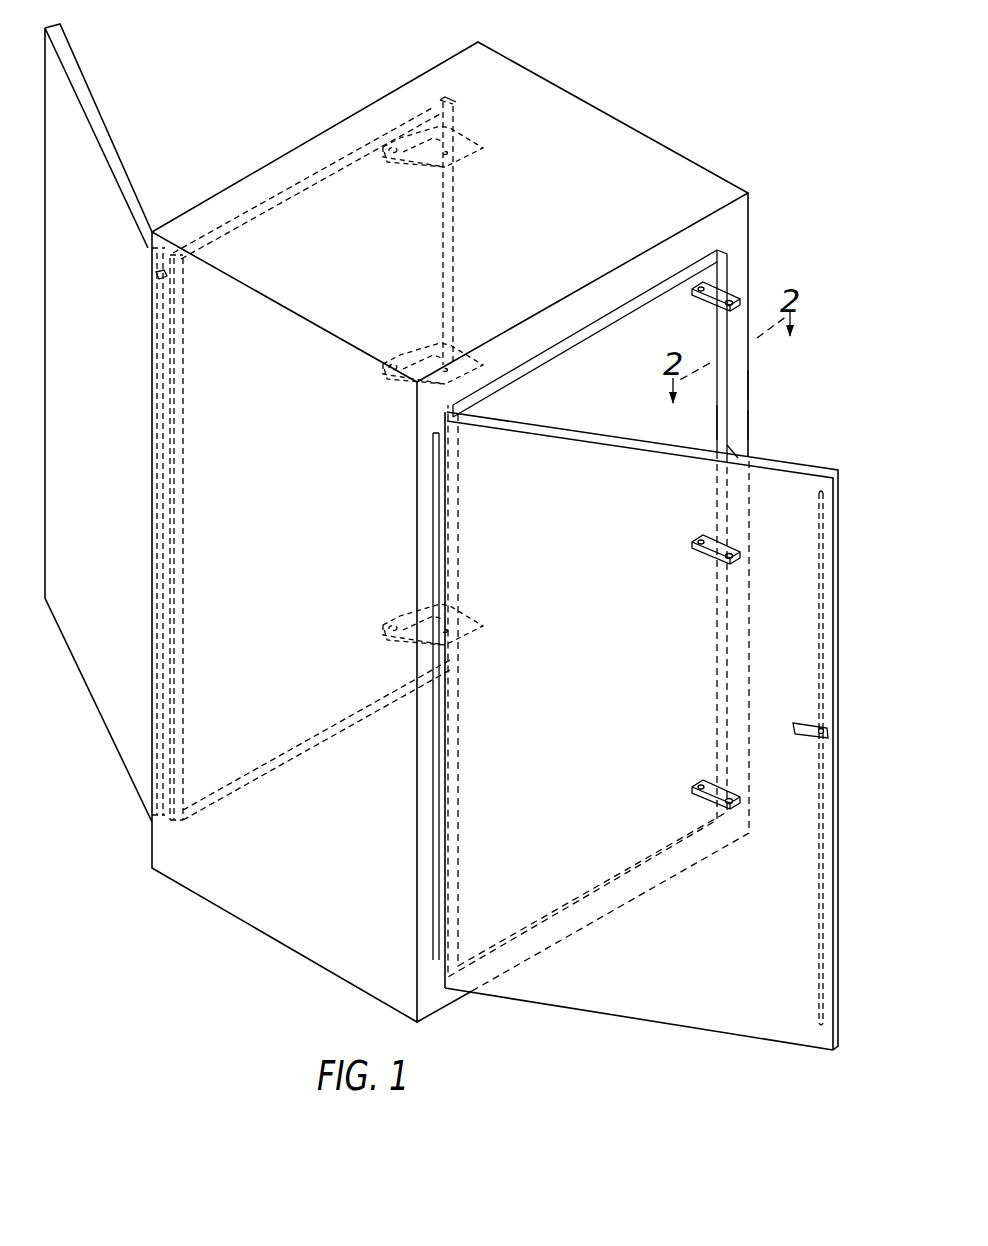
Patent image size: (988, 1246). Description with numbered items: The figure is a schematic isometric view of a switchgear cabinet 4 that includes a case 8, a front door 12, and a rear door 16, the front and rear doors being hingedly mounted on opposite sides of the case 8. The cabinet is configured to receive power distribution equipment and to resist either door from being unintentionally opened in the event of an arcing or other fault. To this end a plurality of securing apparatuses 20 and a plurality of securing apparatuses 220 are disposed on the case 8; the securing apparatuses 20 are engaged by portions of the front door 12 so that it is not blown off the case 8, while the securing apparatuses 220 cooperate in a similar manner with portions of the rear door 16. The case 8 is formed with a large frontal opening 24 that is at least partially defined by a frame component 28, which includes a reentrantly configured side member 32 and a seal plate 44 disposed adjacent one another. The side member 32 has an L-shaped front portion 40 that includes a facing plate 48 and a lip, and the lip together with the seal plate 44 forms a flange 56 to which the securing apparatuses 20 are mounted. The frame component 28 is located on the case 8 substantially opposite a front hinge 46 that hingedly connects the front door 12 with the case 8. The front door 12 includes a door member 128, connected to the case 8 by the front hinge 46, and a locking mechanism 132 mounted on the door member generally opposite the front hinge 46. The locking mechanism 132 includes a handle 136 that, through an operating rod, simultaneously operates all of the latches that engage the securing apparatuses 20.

The switchgear cabinet 4 is at (489, 515).
The case 8 is at (606, 110).
The front door 12 is at (613, 753).
The rear door 16 is at (107, 112).
The securing apparatus 20 is at (733, 289).
The frontal opening 24 is at (583, 340).
The frame component 28 is at (715, 325).
The side member 32 is at (752, 385).
The front portion 40 is at (749, 422).
The seal plate 44 is at (718, 418).
The front hinge 46 is at (433, 447).
The facing plate 48 is at (743, 237).
The flange 56 is at (742, 458).
The door member 128 is at (652, 1024).
The locking mechanism 132 is at (812, 719).
The handle 136 is at (818, 738).
The securing apparatus 220 is at (481, 153).